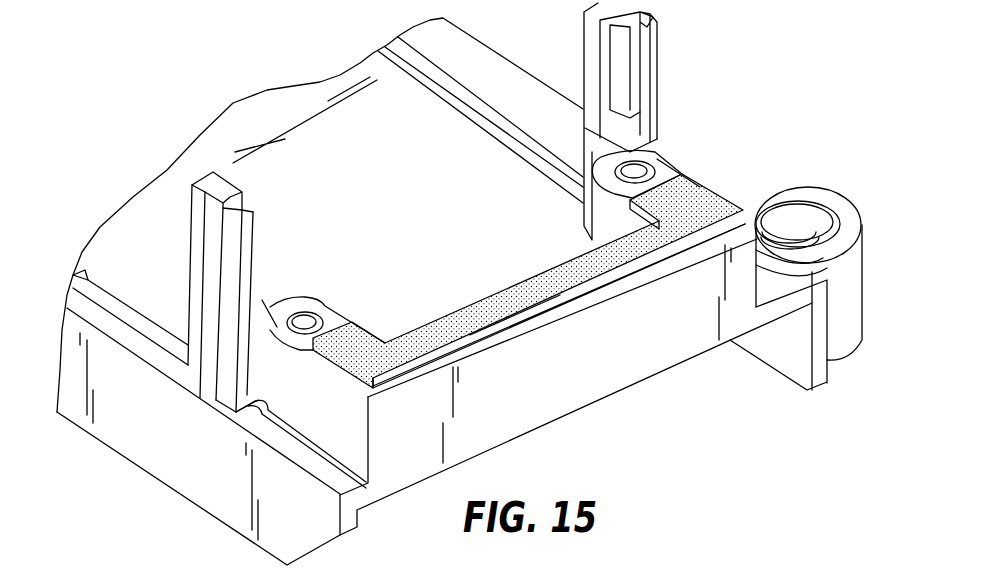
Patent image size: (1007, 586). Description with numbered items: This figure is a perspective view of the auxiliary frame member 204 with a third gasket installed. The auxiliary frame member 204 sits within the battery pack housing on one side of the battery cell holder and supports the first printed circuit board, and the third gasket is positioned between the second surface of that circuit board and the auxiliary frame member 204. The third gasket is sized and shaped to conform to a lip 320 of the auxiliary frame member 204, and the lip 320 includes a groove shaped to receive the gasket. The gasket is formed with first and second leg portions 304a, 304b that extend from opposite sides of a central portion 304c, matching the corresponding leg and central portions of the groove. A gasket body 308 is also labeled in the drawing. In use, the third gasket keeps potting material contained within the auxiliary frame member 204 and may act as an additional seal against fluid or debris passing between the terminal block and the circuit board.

The auxiliary frame member 204 is at (655, 340).
The first leg portion 304a is at (362, 340).
The second leg portion 304b is at (688, 180).
The central portion 304c is at (480, 316).
The body 308 is at (522, 283).
The lip 320 is at (745, 227).